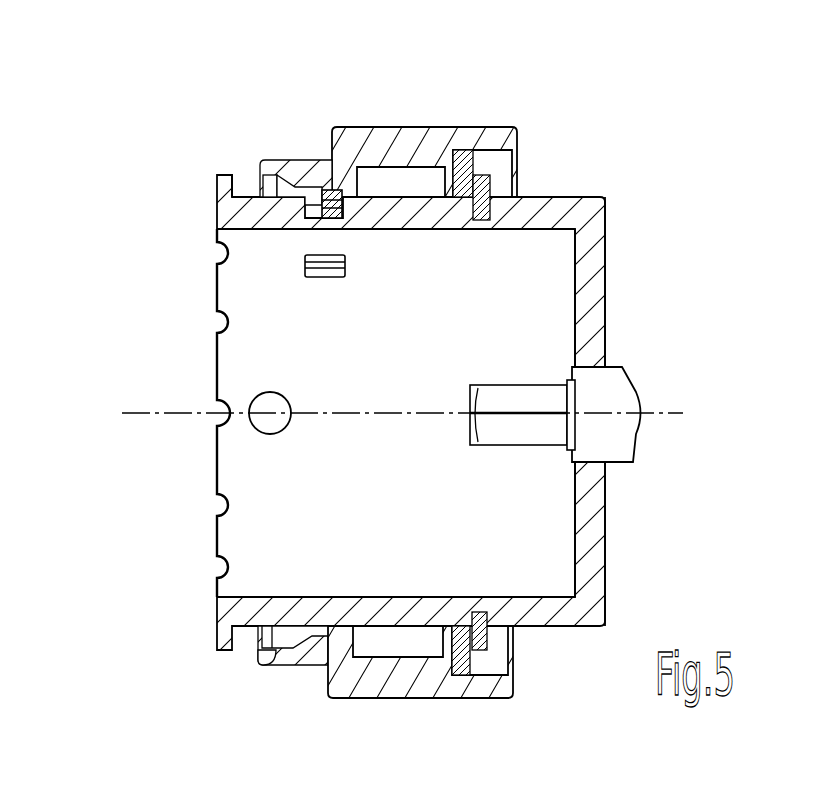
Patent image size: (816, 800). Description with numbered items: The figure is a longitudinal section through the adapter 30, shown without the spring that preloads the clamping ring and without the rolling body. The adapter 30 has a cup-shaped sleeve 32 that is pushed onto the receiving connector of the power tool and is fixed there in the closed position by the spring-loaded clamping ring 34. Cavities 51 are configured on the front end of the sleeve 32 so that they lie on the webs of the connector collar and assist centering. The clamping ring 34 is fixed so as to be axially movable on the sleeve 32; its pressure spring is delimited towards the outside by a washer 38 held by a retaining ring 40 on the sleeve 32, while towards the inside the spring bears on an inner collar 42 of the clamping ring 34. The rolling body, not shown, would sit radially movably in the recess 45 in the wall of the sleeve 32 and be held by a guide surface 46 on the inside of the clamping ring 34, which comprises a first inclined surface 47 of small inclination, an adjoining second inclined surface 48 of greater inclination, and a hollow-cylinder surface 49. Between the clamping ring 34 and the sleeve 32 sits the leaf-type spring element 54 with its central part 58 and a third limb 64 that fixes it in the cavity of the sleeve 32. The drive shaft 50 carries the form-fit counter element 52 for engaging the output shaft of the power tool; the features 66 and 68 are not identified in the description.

The adapter 30 is at (625, 229).
The sleeve 32 is at (568, 208).
The clamping ring 34 is at (435, 140).
The washer 38 is at (462, 660).
The retaining ring 40 is at (490, 185).
The inner collar 42 is at (357, 195).
The recess 45 is at (270, 422).
The guide surface 46 is at (285, 171).
The first inclined surface 47 is at (322, 190).
The second inclined surface 48 is at (290, 662).
The hollow-cylinder surface 49 is at (265, 668).
The drive shaft 50 is at (608, 393).
The cavities 51 is at (217, 322).
The form-fit counter element 52 is at (530, 402).
The spring element 54 is at (333, 187).
The central part 58 is at (475, 713).
The third limb 64 is at (305, 258).
The flange 66 is at (220, 197).
The ring 68 is at (420, 713).